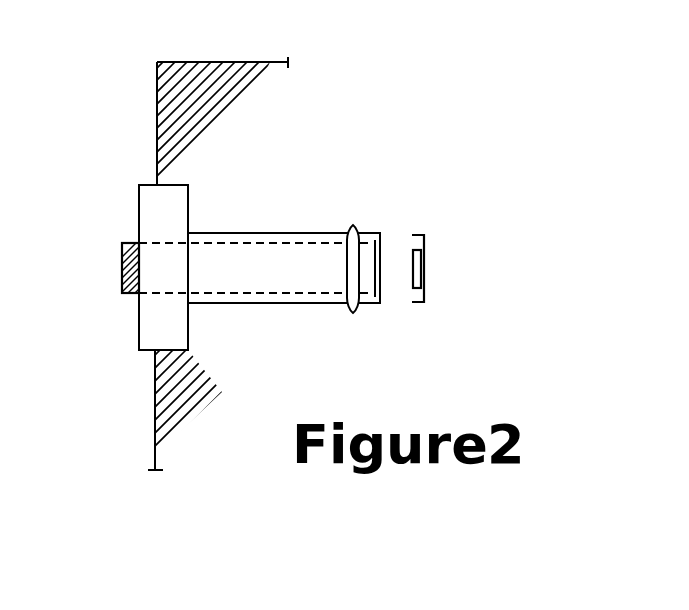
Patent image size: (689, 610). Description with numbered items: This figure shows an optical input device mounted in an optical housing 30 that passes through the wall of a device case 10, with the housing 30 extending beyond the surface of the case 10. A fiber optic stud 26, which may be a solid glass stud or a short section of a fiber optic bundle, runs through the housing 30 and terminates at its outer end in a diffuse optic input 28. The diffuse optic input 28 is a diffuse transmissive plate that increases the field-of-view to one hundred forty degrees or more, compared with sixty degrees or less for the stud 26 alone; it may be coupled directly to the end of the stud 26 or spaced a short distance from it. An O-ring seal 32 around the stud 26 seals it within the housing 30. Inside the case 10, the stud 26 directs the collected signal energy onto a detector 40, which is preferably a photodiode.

The device case 10 is at (216, 62).
The fiber optic stud 26 is at (247, 267).
The diffuse optic input 28 is at (122, 258).
The optical housing 30 is at (139, 318).
The O-ring seal 32 is at (353, 314).
The detector 40 is at (424, 247).